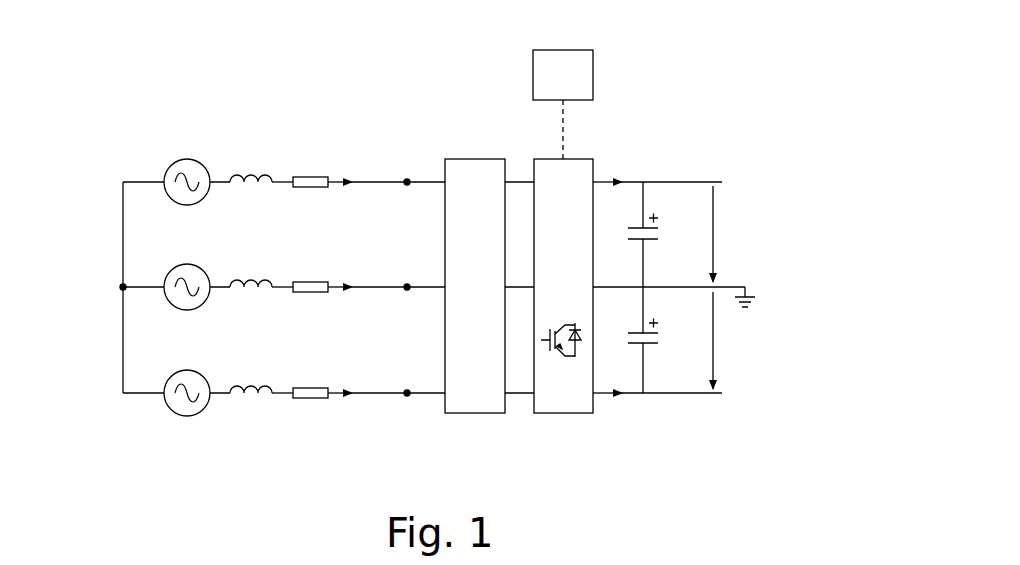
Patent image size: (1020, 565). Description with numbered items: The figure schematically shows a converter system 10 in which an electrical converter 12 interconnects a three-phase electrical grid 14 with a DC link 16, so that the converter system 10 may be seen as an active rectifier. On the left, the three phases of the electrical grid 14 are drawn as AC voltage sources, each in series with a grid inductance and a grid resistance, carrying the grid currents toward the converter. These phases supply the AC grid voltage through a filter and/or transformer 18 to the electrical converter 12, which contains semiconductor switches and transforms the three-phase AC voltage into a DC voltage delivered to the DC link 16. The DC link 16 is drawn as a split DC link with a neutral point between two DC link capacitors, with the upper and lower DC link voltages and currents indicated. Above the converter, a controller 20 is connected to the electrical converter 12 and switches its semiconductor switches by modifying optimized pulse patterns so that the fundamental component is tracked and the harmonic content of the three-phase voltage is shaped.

The converter system 10 is at (730, 71).
The electrical converter 12 is at (560, 413).
The electrical grid 14 is at (121, 141).
The DC link 16 is at (744, 156).
The filter/transformer 18 is at (465, 158).
The controller 20 is at (593, 77).